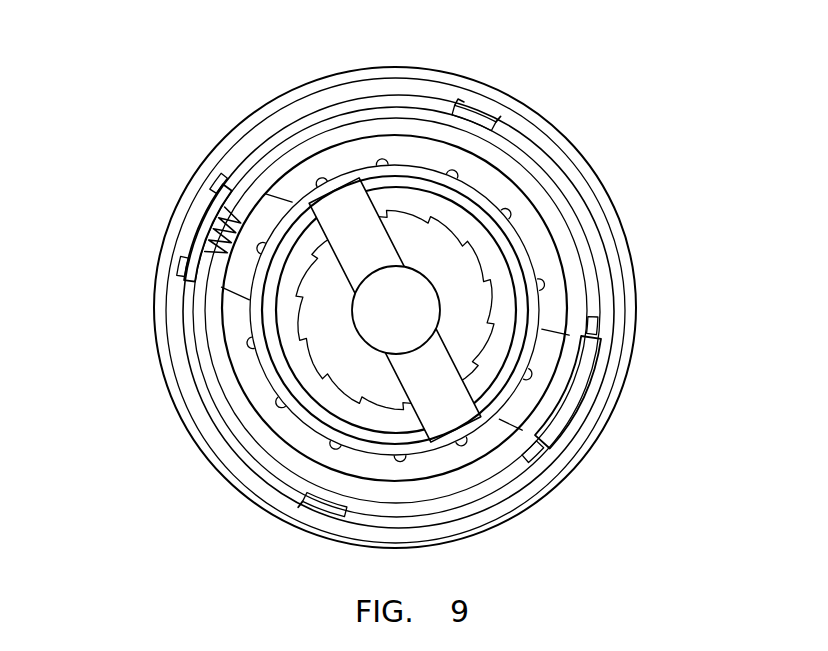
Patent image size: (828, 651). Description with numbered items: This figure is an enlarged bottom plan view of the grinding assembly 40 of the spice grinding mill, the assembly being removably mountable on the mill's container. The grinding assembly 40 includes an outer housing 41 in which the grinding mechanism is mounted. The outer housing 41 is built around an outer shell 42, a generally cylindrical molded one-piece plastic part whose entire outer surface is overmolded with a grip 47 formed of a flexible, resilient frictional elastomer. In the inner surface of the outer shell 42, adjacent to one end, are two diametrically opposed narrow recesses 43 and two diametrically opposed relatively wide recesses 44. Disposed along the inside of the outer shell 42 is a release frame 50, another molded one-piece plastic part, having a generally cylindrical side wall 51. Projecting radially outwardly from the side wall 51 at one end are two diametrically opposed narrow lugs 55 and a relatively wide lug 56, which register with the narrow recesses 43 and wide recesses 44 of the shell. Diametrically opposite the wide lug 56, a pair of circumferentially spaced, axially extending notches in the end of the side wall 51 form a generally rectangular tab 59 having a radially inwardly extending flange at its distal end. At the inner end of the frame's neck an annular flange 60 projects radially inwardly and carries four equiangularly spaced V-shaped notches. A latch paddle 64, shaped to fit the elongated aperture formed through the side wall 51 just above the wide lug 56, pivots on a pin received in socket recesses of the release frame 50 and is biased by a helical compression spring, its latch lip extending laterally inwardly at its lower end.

The grinding assembly 40 is at (625, 153).
The outer housing 41 is at (289, 87).
The outer shell 42 is at (453, 90).
The narrow recesses 43 is at (507, 105).
The wide recesses 44 is at (234, 166).
The grip 47 is at (626, 246).
The release frame 50 is at (598, 293).
The side wall 51 is at (358, 92).
The narrow lugs 55 is at (471, 104).
The wide lug 56 is at (205, 212).
The tab 59 is at (585, 386).
The annular flange 60 is at (235, 386).
The latch paddle 64 is at (203, 232).